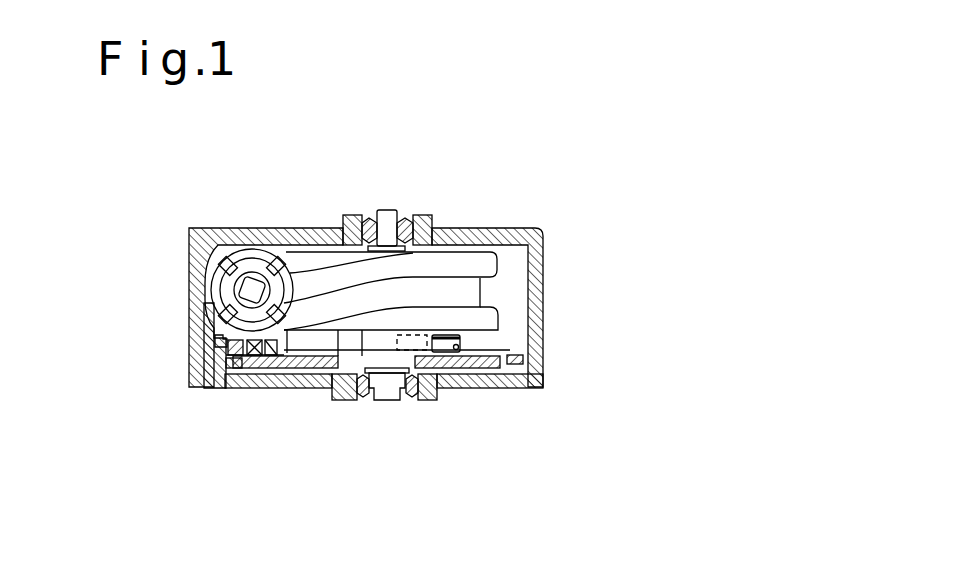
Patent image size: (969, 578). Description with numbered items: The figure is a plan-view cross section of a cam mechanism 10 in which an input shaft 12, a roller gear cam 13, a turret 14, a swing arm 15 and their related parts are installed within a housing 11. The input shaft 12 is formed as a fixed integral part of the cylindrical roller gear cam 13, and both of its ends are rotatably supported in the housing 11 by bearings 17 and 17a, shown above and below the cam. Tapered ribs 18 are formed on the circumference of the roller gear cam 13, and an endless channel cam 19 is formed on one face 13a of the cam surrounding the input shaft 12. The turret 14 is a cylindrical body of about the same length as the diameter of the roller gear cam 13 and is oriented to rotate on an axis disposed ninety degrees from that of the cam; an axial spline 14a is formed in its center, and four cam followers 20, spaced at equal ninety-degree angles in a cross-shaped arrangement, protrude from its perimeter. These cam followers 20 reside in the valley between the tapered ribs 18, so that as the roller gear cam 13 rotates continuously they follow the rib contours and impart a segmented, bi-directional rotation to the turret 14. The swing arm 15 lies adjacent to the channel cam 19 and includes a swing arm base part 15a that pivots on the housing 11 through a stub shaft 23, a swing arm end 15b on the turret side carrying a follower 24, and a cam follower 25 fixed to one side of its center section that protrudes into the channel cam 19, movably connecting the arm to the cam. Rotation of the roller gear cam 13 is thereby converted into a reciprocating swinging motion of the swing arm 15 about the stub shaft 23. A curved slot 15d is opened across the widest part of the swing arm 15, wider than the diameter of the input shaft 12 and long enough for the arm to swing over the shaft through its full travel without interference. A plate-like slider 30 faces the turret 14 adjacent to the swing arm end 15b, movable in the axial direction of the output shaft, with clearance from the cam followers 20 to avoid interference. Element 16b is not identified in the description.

The cam mechanism 10 is at (531, 199).
The housing 11 is at (543, 237).
The input shaft 12 is at (387, 222).
The roller gear cam 13 is at (467, 297).
The face of roller gear cam 13a is at (333, 388).
The turret 14 is at (236, 245).
The axial spline 14a is at (202, 283).
The swing arm 15 is at (305, 388).
The swing arm base part 15a is at (543, 368).
The swing arm end 15b is at (223, 388).
The curved slot 15d is at (383, 403).
The cam follower ring 16b is at (262, 250).
The bearing 17 is at (415, 226).
The bearing 17a is at (410, 398).
The tapered ribs 18 is at (335, 323).
The endless channel cam 19 is at (500, 347).
The cam followers 20 is at (194, 243).
The stub shaft 23 is at (500, 388).
The follower 24 is at (212, 352).
The cam follower 25 is at (450, 388).
The slider 30 is at (212, 338).